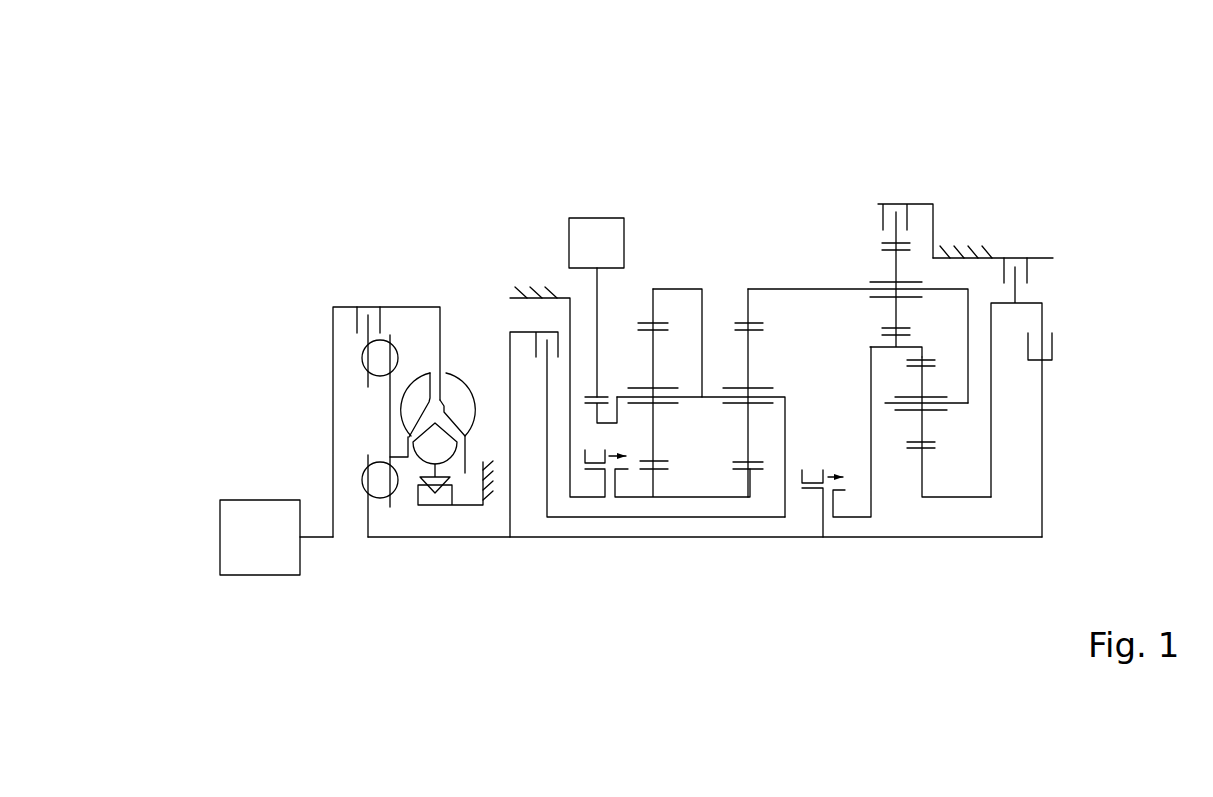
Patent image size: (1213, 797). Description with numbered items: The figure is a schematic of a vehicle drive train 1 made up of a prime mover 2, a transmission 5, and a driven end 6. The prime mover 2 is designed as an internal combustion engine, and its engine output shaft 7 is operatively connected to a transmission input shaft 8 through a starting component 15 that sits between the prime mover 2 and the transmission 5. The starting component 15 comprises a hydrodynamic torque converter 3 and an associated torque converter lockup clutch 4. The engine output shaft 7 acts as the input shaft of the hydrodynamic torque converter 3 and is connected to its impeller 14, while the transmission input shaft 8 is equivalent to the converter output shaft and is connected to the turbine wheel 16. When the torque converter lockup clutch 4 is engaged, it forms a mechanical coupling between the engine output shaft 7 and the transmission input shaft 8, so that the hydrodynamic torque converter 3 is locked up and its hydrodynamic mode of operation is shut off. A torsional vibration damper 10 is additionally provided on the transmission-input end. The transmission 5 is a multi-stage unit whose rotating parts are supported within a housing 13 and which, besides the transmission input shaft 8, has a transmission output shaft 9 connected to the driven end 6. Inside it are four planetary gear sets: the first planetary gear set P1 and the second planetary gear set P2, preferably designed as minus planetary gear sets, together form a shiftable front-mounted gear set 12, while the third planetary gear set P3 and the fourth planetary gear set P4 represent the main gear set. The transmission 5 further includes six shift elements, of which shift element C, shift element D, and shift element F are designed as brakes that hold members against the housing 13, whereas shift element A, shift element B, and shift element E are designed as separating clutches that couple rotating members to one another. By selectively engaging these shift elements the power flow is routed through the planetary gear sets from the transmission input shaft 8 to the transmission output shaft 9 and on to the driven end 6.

The vehicle drive train 1 is at (503, 232).
The prime mover 2 is at (263, 510).
The hydrodynamic torque converter 3 is at (455, 362).
The torque converter lockup clutch 4 is at (357, 300).
The transmission 5 is at (700, 367).
The driven end 6 is at (603, 235).
The engine output shaft 7 is at (317, 542).
The transmission input shaft 8 is at (408, 542).
The transmission output shaft 9 is at (593, 413).
The torsional vibration damper 10 is at (358, 475).
The gear set 12 is at (772, 283).
The housing 13 is at (968, 250).
The impeller 14 is at (459, 410).
The starting component 15 is at (412, 267).
The turbine wheel 16 is at (415, 363).
The shift element E is at (544, 328).
The shift element F is at (593, 478).
The shift element A is at (809, 495).
The shift element B is at (1060, 345).
The shift element C is at (1042, 275).
The shift element D is at (899, 201).
The first planetary gear set P1 is at (920, 505).
The second planetary gear set P2 is at (872, 263).
The third planetary gear set P3 is at (750, 545).
The fourth planetary gear set P4 is at (655, 545).